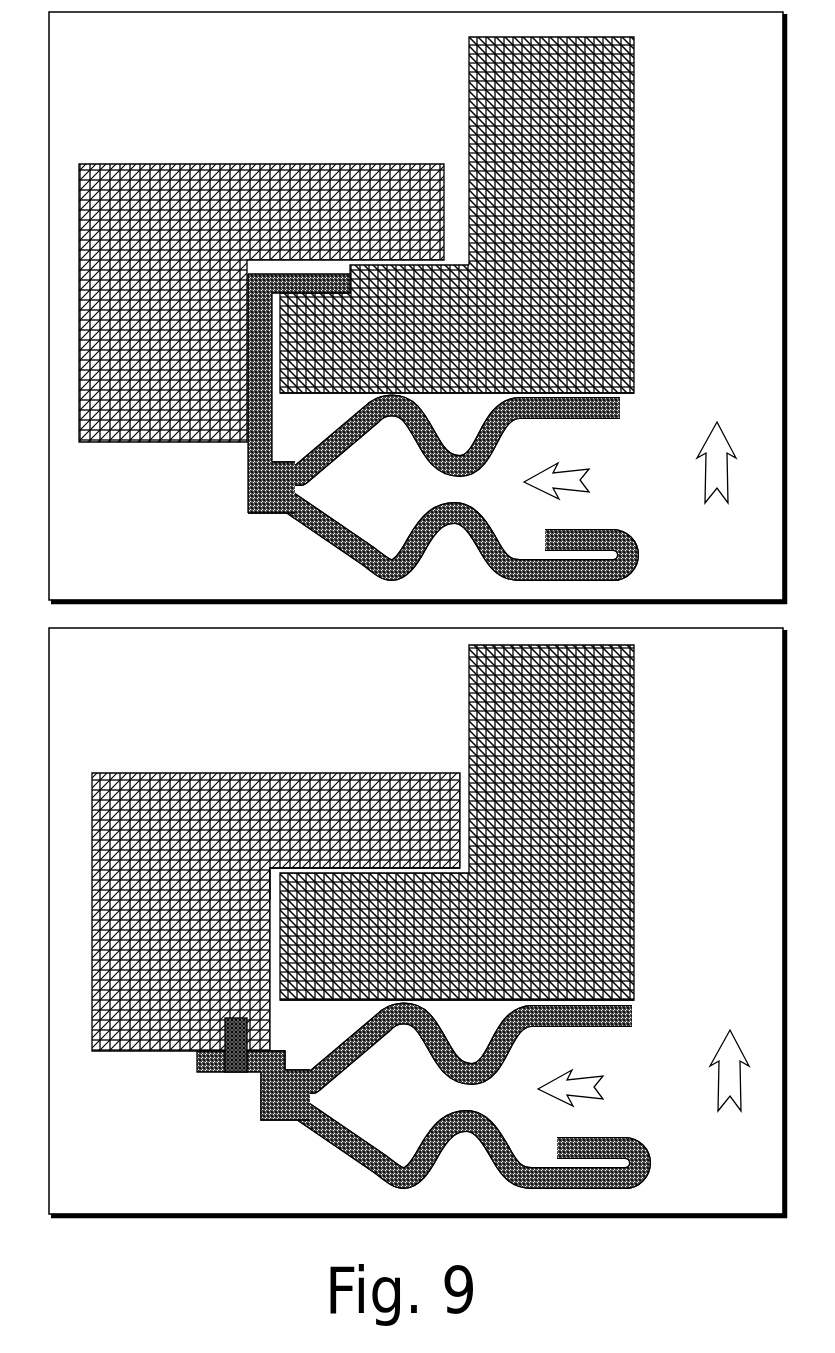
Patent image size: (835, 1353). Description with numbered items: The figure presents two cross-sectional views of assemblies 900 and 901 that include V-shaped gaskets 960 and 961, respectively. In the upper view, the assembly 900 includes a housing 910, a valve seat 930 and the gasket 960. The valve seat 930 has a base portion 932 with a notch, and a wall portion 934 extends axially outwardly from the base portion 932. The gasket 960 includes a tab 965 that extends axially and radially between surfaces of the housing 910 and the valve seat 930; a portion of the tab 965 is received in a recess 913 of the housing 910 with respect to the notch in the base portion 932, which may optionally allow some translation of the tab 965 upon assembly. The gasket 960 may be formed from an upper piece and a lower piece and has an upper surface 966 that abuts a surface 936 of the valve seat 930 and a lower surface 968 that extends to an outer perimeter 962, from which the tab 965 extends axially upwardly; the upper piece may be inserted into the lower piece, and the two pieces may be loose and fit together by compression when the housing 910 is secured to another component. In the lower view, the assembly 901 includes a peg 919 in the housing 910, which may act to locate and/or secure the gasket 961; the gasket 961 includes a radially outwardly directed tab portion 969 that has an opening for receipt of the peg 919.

The assembly 900 is at (120, 60).
The assembly 901 is at (120, 677).
The housing 910 is at (177, 256).
The recess 913 is at (308, 262).
The peg 919 is at (235, 1073).
The valve seat 930 is at (507, 530).
The base portion 932 is at (460, 333).
The wall portion 934 is at (570, 141).
The surface 936 is at (427, 394).
The V-shaped gasket 960 is at (648, 408).
The V-shaped gasket 961 is at (668, 1008).
The outer perimeter 962 is at (247, 513).
The tab 965 is at (250, 455).
The upper surface 966 is at (349, 419).
The lower surface 968 is at (318, 533).
The tab portion 969 is at (203, 1073).